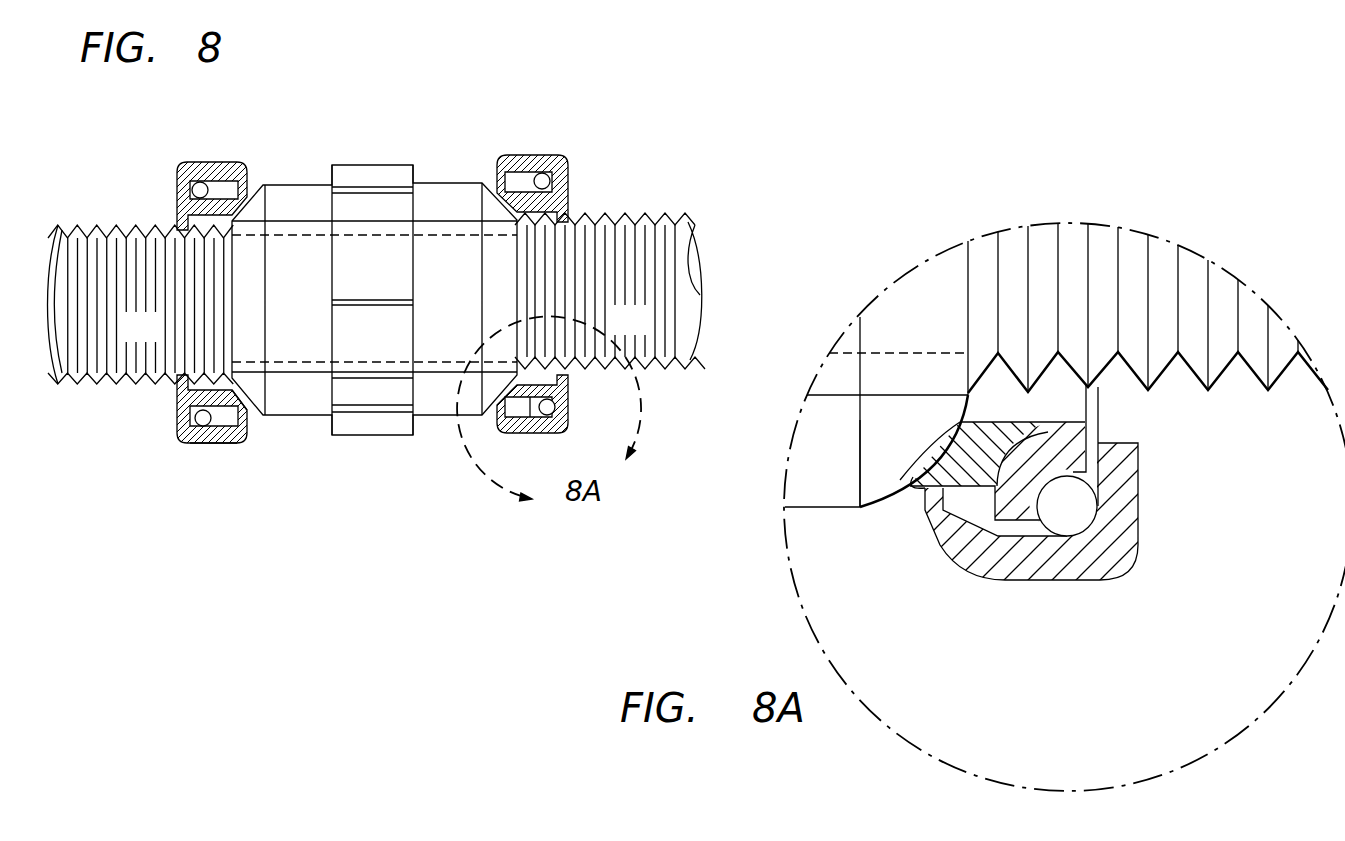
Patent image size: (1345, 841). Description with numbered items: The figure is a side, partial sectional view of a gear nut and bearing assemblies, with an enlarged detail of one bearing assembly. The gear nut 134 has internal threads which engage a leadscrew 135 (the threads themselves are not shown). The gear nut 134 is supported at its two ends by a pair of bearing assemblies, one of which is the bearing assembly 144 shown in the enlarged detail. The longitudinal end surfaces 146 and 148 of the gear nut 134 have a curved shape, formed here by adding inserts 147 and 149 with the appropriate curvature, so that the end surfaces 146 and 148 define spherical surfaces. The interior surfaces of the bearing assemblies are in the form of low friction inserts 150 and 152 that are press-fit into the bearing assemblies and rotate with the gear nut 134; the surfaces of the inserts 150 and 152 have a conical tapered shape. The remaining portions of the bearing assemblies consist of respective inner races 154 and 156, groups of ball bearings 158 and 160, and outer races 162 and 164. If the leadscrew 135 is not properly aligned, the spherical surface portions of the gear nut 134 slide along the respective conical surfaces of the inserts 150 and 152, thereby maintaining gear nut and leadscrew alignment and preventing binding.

In FIG. 8, the gear nut 134 is at (427, 198).
In FIG. 8, the leadscrew 135 is at (637, 220).
In FIG. 8A, the bearing assembly 144 is at (1197, 423).
In FIG. 8, the longitudinal end surface 146 is at (216, 272).
In FIG. 8, the insert 147 is at (254, 192).
In FIG. 8, the longitudinal end surface 148 is at (529, 262).
In FIG. 8A, the longitudinal end surface 148 is at (887, 514).
In FIG. 8, the insert 149 is at (486, 190).
In FIG. 8A, the insert 149 is at (897, 477).
In FIG. 8, the low friction insert 150 is at (253, 412).
In FIG. 8, the low friction insert 152 is at (511, 410).
In FIG. 8A, the low friction insert 152 is at (990, 430).
In FIG. 8, the inner race 154 is at (182, 403).
In FIG. 8, the inner race 156 is at (535, 418).
In FIG. 8A, the inner race 156 is at (1052, 443).
In FIG. 8, the ball bearings 158 is at (193, 443).
In FIG. 8, the ball bearings 160 is at (553, 413).
In FIG. 8A, the ball bearings 160 is at (1067, 504).
In FIG. 8, the outer race 162 is at (222, 445).
In FIG. 8, the outer race 164 is at (565, 426).
In FIG. 8A, the outer race 164 is at (1125, 555).